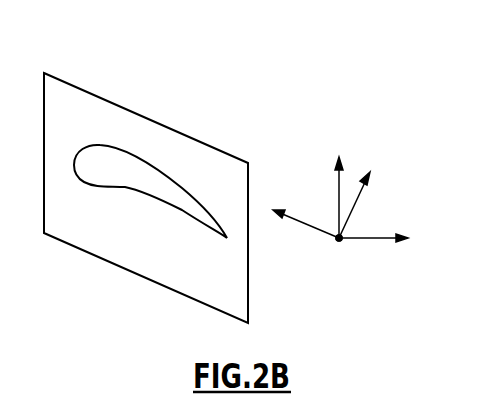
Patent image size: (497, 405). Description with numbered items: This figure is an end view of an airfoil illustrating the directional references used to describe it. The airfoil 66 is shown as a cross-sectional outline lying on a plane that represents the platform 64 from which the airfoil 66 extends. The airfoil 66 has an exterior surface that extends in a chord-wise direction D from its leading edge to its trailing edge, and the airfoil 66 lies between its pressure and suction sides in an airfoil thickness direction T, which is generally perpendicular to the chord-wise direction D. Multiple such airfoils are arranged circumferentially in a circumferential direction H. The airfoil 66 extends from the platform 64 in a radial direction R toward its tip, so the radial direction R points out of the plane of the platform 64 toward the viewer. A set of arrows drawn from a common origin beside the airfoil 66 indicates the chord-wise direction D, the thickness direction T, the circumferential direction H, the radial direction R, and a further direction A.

The platform 64 is at (93, 94).
The airfoil 66 is at (149, 163).
The circumferential direction H is at (340, 185).
The airfoil thickness direction T is at (362, 201).
The chord-wise direction D is at (306, 212).
The axial direction A is at (382, 240).
The radial direction R is at (341, 242).